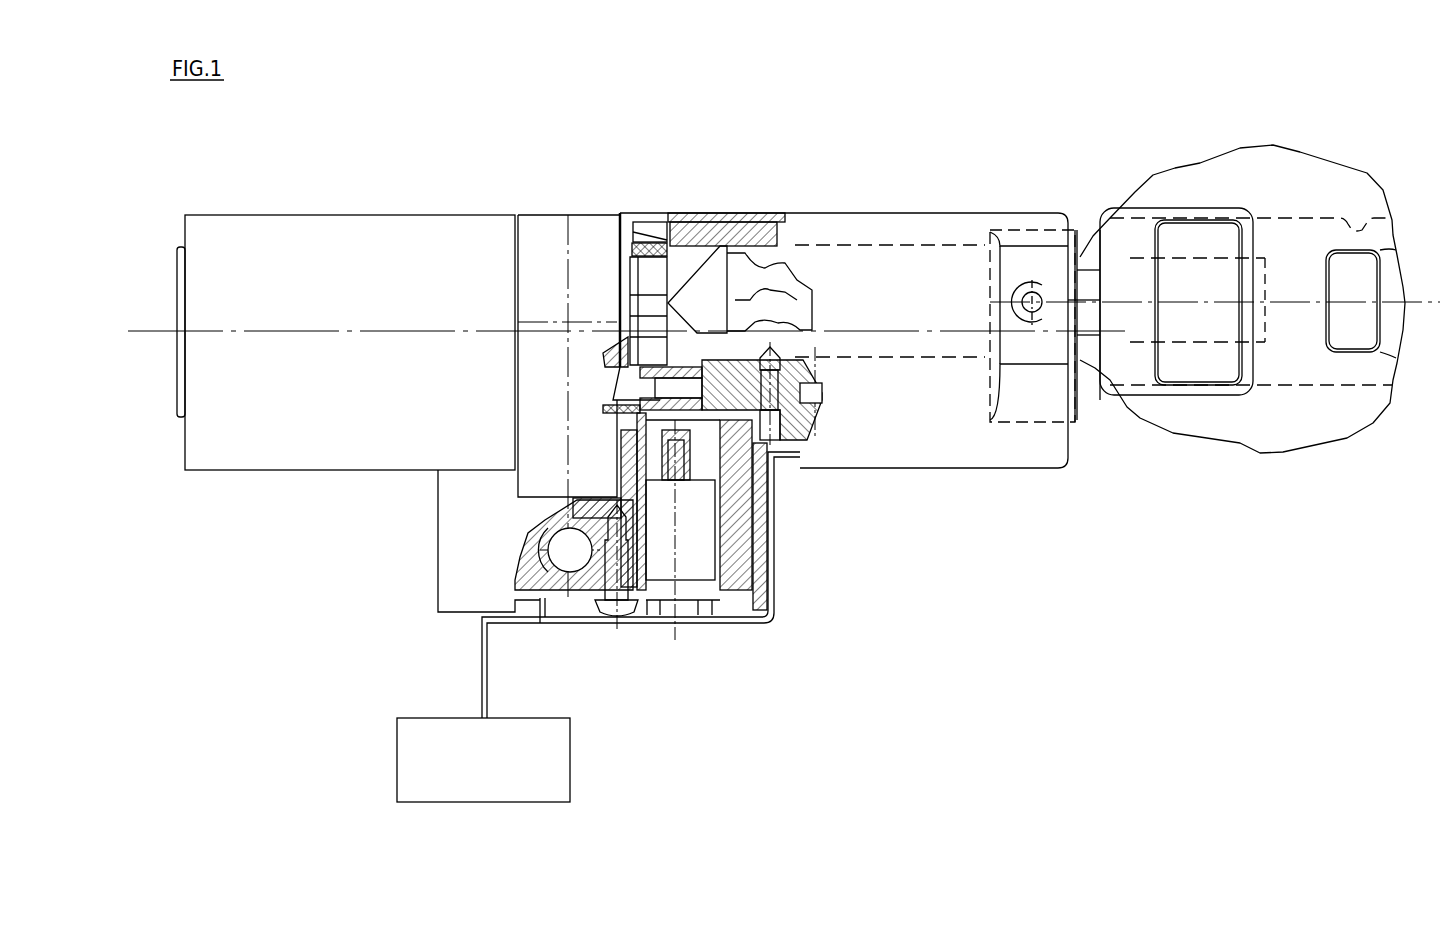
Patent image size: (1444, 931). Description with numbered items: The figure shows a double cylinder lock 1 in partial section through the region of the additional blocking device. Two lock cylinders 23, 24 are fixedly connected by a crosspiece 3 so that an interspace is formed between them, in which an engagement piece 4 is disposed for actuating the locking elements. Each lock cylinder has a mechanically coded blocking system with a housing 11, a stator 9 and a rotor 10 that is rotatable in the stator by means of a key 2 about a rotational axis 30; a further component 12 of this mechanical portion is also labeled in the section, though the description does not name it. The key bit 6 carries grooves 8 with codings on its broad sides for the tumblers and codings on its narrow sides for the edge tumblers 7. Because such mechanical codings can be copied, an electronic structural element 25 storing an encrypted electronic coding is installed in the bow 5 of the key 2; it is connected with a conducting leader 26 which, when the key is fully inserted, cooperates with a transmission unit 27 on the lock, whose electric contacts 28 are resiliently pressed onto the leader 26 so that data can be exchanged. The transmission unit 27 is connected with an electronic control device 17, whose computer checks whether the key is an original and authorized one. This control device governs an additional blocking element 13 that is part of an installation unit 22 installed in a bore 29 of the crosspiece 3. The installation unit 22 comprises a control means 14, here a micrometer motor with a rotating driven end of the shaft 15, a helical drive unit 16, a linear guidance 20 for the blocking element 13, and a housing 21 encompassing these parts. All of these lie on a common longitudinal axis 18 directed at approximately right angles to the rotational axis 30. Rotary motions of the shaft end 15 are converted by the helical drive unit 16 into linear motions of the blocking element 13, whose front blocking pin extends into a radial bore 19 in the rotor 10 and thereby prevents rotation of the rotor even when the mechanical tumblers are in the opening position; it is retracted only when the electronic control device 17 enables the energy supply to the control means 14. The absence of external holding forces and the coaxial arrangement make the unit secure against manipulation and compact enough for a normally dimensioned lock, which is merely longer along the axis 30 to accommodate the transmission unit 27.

The cylinder lock 1 is at (330, 176).
The key 2 is at (1083, 253).
The crosspiece 3 is at (462, 555).
The engagement piece 4 is at (533, 253).
The bow 5 is at (1307, 187).
The key bit 6 is at (752, 242).
The edge tumblers 7 is at (810, 440).
The grooves 8 is at (767, 267).
The stator 9 is at (686, 240).
The rotor 10 is at (727, 255).
The housing 11 is at (658, 216).
The bolt 12 is at (775, 303).
The additional blocking element 13 is at (777, 503).
The control means 14 is at (663, 553).
The driven end of the shaft 15 is at (778, 555).
The helical drive unit 16 is at (712, 620).
The electronic control device 17 is at (417, 772).
The common longitudinal axis 18 is at (666, 480).
The radial bore 19 is at (690, 387).
The linear guidance 20 is at (625, 468).
The housing 21 is at (620, 482).
The installation unit 22 is at (512, 607).
The lock cylinder 23 is at (892, 212).
The lock cylinder 24 is at (432, 213).
The electronic structural element 25 is at (1195, 278).
The conducting leader 26 is at (1085, 317).
The transmission unit 27 is at (1040, 412).
The electric contacts 28 is at (1025, 303).
The bore 29 is at (770, 620).
The rotational axis 30 is at (933, 327).